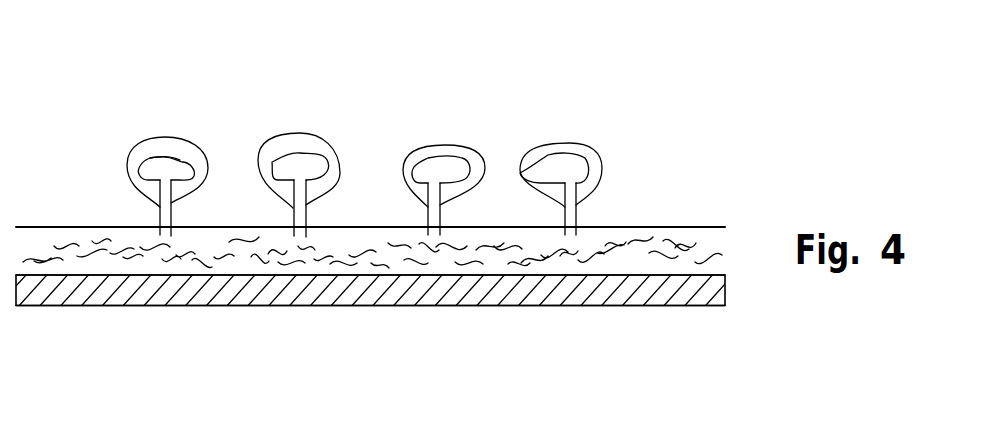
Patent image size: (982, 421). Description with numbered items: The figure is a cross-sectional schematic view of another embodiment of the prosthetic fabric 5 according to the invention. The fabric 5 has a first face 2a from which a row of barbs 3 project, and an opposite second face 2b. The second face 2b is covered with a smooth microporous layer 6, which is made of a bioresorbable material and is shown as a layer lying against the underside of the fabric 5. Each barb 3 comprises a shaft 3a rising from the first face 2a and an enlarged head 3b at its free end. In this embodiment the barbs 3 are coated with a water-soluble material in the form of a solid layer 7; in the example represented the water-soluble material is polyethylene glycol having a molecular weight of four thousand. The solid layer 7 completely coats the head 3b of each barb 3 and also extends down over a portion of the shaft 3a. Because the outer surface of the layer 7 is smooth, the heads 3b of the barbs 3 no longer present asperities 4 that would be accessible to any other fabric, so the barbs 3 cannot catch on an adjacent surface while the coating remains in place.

The prosthetic fabric 5 is at (735, 85).
The first face 2a is at (700, 227).
The second face 2b is at (660, 276).
The microporous layer 6 is at (175, 314).
The barb 3 is at (195, 122).
The shaft 3a is at (146, 214).
The head 3b is at (136, 154).
The asperities 4 is at (273, 161).
The solid layer 7 is at (158, 126).